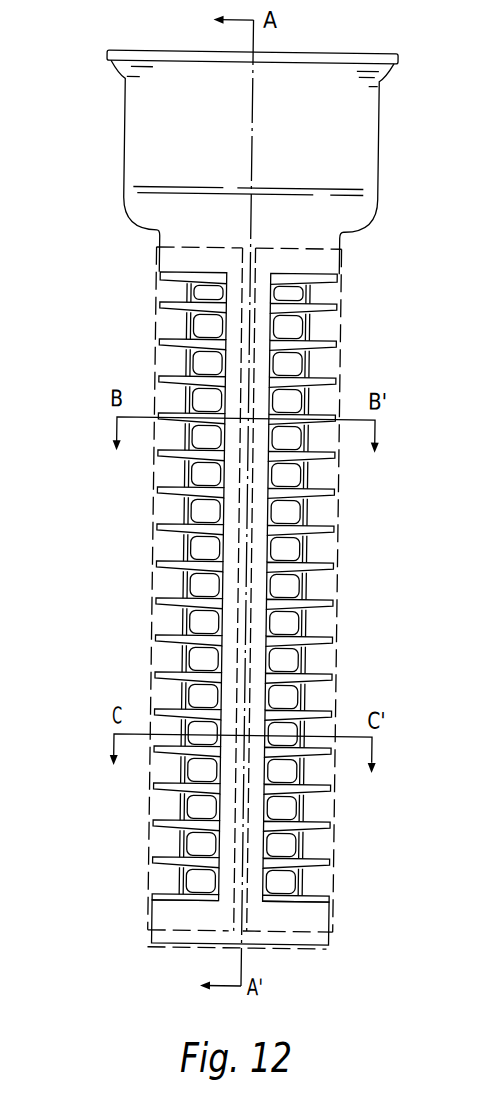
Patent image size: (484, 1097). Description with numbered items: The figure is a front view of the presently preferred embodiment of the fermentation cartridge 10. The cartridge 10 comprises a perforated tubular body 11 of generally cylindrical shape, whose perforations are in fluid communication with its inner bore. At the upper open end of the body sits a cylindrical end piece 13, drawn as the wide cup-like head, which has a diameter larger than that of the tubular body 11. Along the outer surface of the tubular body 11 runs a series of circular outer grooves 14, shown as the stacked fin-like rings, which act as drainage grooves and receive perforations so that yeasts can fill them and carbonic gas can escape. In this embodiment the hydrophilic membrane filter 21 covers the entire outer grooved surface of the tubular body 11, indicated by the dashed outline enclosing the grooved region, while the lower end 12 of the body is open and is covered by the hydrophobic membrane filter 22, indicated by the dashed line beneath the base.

The cartridge 10 is at (243, 503).
The tubular body 11 is at (196, 569).
The lower end 12 is at (96, 900).
The cylindrical end piece 13 is at (95, 234).
The outer grooves 14 is at (165, 500).
The hydrophilic membrane filter 21 is at (337, 549).
The hydrophobic membrane filter 22 is at (331, 948).